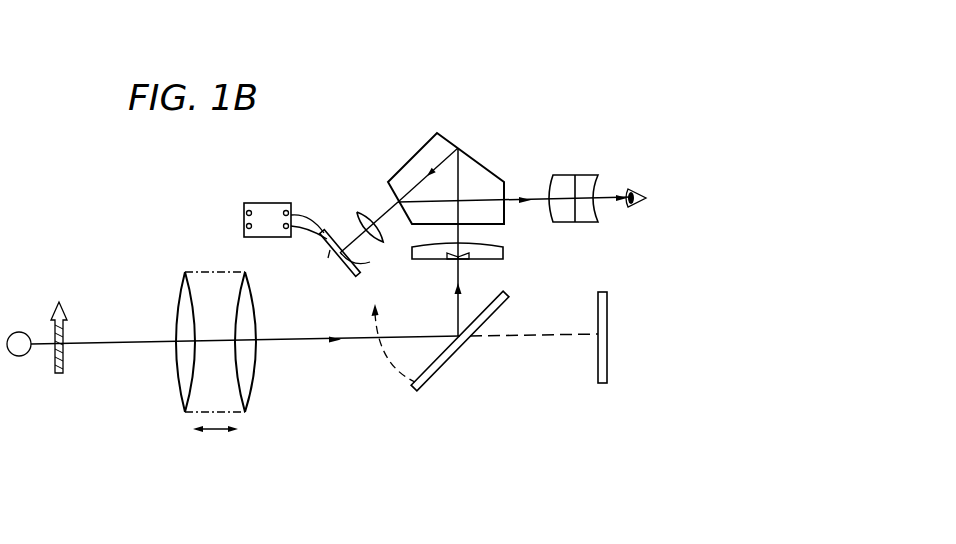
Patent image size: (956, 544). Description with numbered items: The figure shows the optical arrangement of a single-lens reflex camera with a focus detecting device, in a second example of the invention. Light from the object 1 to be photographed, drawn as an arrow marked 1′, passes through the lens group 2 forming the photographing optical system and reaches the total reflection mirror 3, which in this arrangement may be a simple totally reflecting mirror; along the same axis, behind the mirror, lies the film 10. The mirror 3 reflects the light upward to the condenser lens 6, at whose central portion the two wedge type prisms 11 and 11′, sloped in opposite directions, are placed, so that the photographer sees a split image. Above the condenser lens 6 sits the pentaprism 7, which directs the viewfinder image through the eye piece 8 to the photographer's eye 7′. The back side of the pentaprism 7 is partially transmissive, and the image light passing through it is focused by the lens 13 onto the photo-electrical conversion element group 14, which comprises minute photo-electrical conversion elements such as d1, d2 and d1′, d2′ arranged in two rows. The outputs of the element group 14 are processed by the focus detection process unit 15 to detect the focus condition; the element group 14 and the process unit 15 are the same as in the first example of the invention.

The object 1 is at (53, 338).
The object arrow 1′ is at (65, 368).
The lens group 2 is at (200, 272).
The total reflection mirror 3 is at (505, 297).
The condenser lens 6 is at (503, 244).
The pentaprism 7 is at (430, 148).
The observer eye 7′ is at (641, 192).
The eye piece 8 is at (563, 175).
The film 10 is at (607, 300).
The wedge type prism 11 is at (452, 260).
The wedge type prism 11′ is at (465, 260).
The lens 13 is at (366, 212).
The photo-electrical conversion element group 14 is at (348, 276).
The focus detection process unit 15 is at (258, 203).
The photo-electrical conversion element d1 is at (317, 219).
The photo-electrical conversion element d1′ is at (322, 237).
The photo-electrical conversion element d2 is at (367, 264).
The photo-electrical conversion element d2′ is at (327, 265).